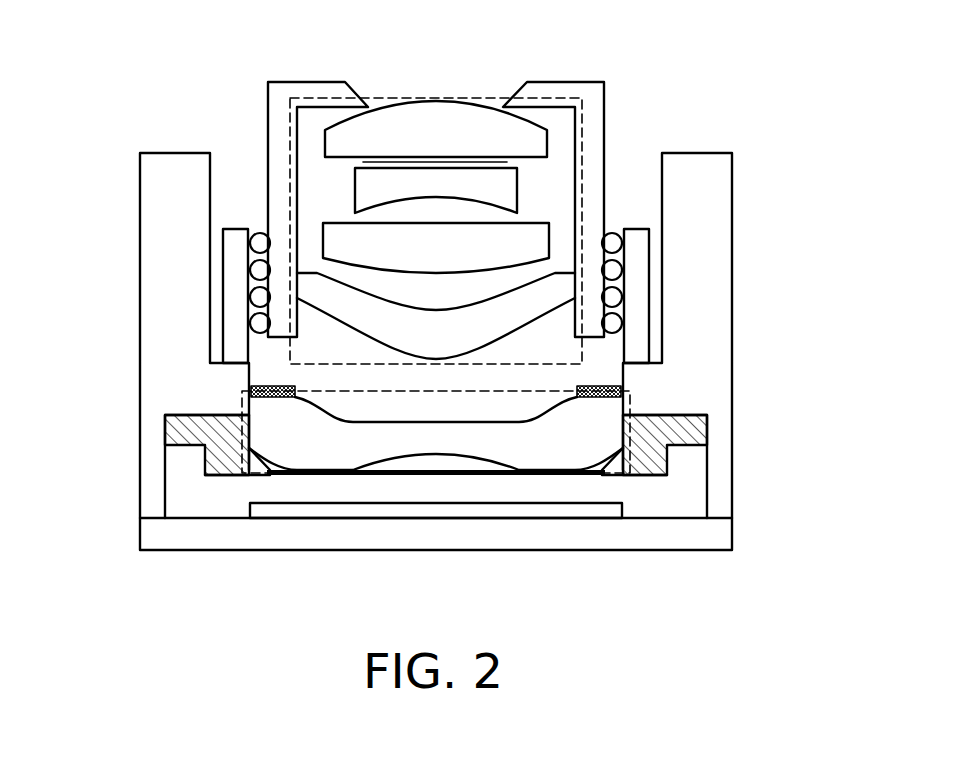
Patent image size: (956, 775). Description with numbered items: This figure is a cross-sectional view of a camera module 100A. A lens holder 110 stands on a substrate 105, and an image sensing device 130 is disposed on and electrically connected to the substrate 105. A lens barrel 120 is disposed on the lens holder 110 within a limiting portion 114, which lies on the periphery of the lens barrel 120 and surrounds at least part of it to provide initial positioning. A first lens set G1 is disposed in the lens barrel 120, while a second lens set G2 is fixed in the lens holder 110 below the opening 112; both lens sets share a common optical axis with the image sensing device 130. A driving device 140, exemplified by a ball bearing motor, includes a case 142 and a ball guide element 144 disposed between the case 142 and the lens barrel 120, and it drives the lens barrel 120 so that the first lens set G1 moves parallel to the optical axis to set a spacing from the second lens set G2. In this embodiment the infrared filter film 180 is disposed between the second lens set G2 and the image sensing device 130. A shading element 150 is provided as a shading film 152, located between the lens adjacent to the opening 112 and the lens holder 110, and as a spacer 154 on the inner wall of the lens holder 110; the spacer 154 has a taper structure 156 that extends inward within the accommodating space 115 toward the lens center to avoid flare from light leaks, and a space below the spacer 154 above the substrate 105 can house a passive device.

The camera module 100A is at (850, 647).
The substrate 105 is at (713, 535).
The lens holder 110 is at (732, 168).
The opening 112 is at (620, 384).
The limiting portion 114 is at (705, 207).
The accommodating space 115 is at (186, 457).
The lens barrel 120 is at (590, 112).
The image sensing device 130 is at (437, 510).
The driving device 140 is at (540, 294).
The case 142 is at (635, 285).
The ball guide element 144 is at (614, 243).
The shading element 150 is at (70, 367).
The shading film 152 is at (268, 384).
The spacer 154 is at (185, 432).
The taper structure 156 is at (257, 477).
The infrared filter film 180 is at (387, 478).
The first lens set G1 is at (388, 97).
The second lens set G2 is at (630, 435).